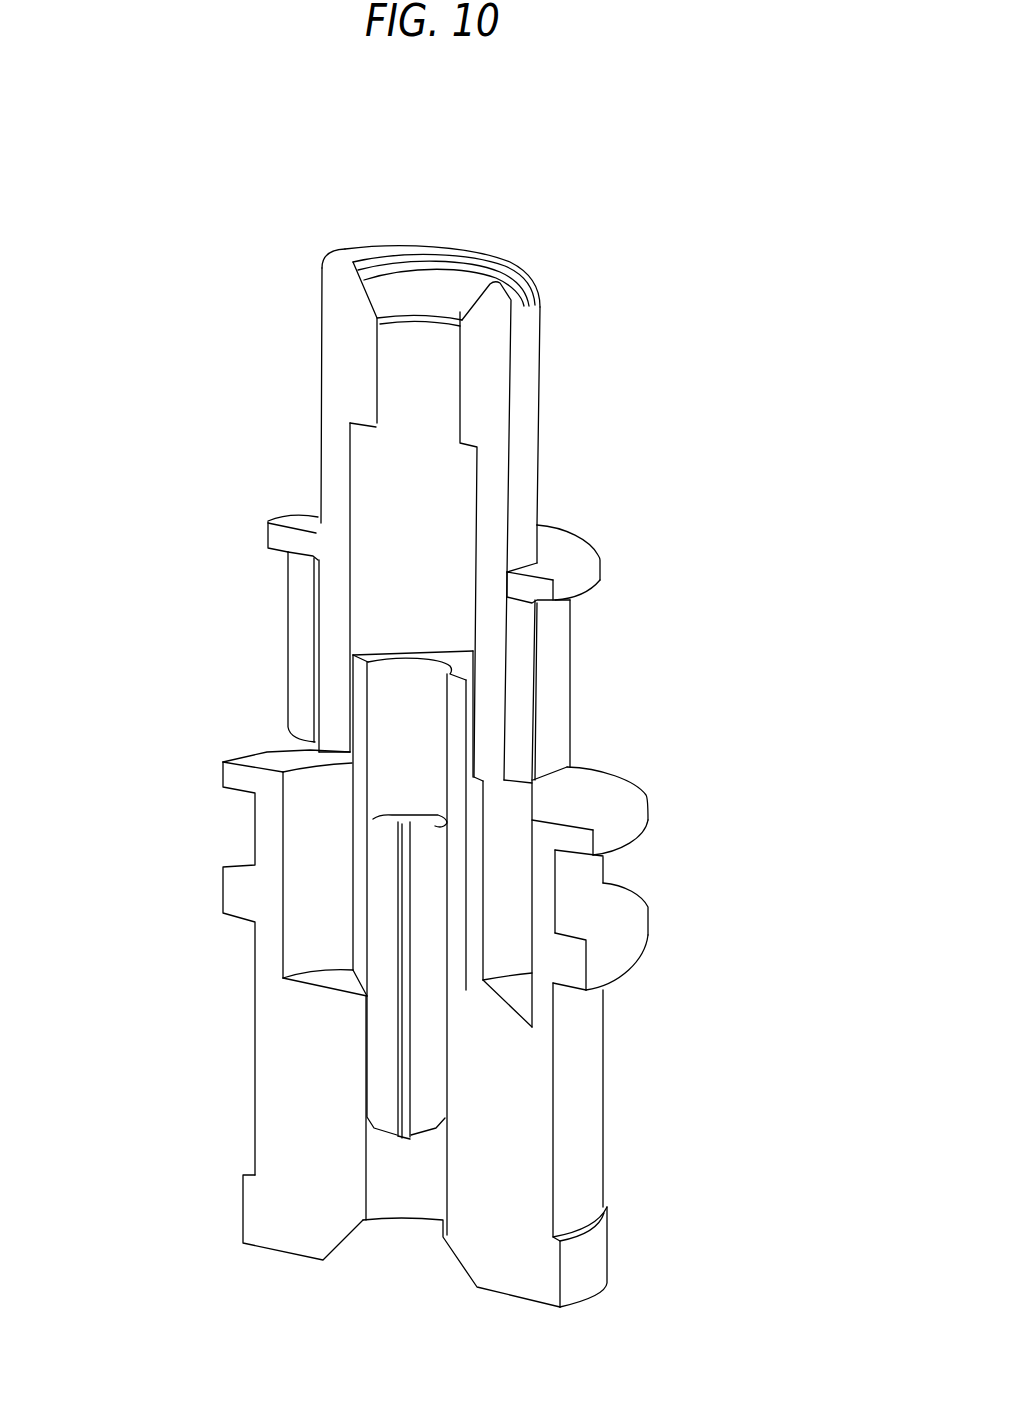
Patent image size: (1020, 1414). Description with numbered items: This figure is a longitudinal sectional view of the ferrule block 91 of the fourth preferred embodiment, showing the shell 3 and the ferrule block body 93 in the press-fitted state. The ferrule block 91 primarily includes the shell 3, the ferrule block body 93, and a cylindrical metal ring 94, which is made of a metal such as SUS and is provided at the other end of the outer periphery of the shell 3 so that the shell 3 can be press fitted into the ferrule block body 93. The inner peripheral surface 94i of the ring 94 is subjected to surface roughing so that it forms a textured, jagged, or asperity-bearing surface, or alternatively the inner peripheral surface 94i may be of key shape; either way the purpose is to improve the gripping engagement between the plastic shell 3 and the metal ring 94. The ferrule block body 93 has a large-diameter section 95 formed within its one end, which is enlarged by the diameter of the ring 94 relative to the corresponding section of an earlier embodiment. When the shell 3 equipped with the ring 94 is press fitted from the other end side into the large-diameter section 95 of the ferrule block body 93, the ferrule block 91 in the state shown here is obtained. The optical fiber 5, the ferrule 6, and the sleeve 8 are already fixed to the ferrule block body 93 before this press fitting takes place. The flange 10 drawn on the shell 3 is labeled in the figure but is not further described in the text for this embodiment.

The ferrule block 91 is at (670, 334).
The shell 3 is at (540, 428).
The flange 10 is at (572, 550).
The ring 94 is at (572, 692).
The inner peripheral surface 94i is at (318, 636).
The sleeve 8 is at (362, 712).
The ferrule 6 is at (377, 1023).
The optical fiber 5 is at (397, 1077).
The large-diameter section 95 is at (310, 898).
The ferrule block body 93 is at (603, 1032).